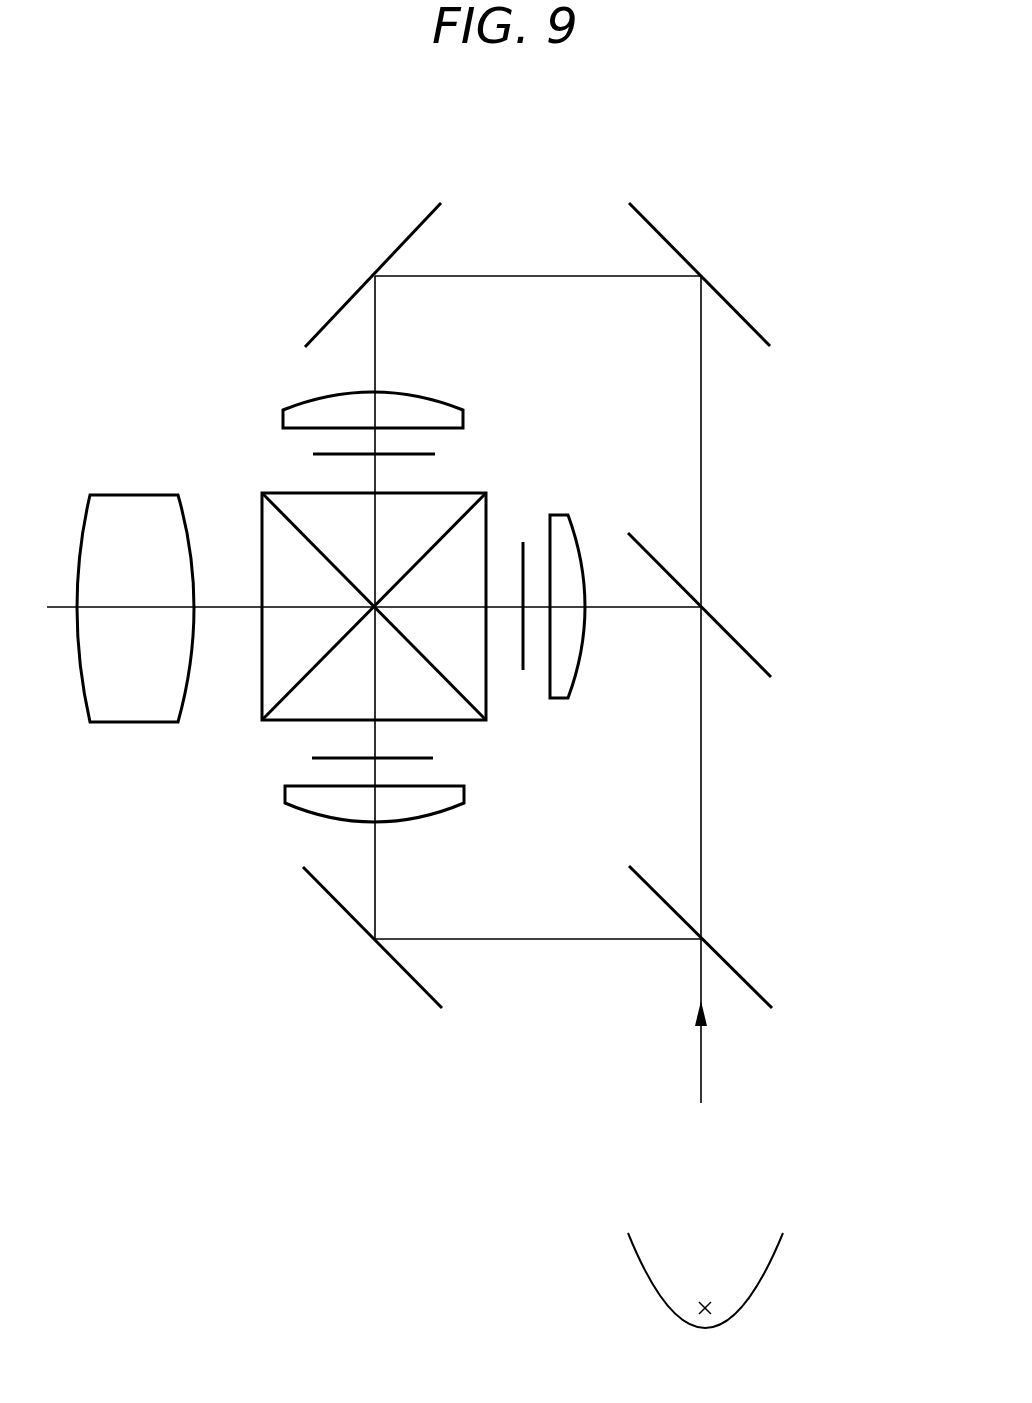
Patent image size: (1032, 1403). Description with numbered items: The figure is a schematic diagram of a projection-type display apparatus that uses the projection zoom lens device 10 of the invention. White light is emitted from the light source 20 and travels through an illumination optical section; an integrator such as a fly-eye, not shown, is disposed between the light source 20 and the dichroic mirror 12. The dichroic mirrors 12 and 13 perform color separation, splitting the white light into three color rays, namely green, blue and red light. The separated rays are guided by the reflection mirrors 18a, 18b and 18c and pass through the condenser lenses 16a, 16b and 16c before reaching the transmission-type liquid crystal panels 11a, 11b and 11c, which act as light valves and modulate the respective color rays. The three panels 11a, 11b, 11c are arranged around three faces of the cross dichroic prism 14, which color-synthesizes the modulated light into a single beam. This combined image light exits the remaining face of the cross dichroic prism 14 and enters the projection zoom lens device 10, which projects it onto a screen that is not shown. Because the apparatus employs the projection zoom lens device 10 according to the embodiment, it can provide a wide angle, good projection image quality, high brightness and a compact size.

The projection zoom lens device 10 is at (131, 713).
The transmission-type liquid crystal panel 11a is at (420, 757).
The transmission-type liquid crystal panel 11b is at (530, 555).
The transmission-type liquid crystal panel 11c is at (318, 455).
The dichroic mirror 12 is at (748, 985).
The dichroic mirror 13 is at (748, 650).
The cross dichroic prism 14 is at (258, 680).
The condenser lens 16a is at (428, 805).
The condenser lens 16b is at (570, 688).
The condenser lens 16c is at (437, 405).
The reflection mirror 18a is at (405, 970).
The reflection mirror 18b is at (740, 315).
The reflection mirror 18c is at (305, 330).
The light source 20 is at (808, 1262).